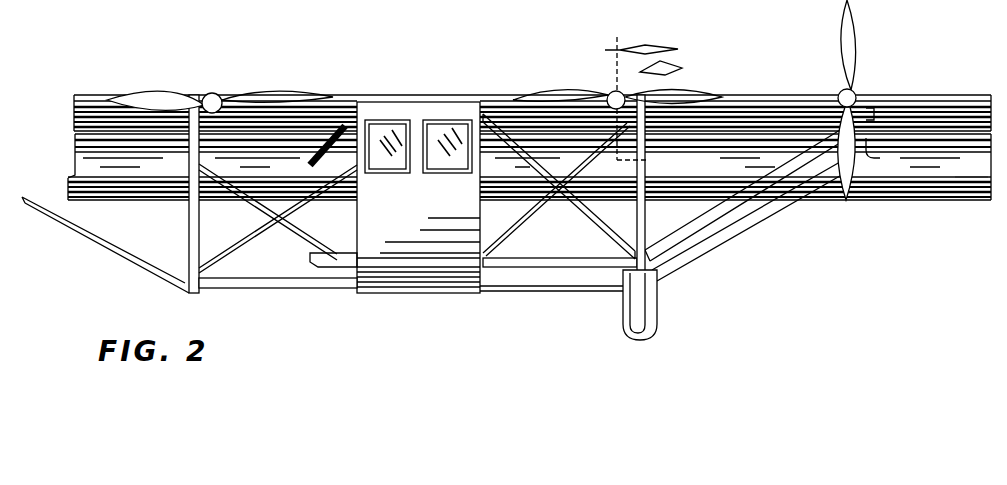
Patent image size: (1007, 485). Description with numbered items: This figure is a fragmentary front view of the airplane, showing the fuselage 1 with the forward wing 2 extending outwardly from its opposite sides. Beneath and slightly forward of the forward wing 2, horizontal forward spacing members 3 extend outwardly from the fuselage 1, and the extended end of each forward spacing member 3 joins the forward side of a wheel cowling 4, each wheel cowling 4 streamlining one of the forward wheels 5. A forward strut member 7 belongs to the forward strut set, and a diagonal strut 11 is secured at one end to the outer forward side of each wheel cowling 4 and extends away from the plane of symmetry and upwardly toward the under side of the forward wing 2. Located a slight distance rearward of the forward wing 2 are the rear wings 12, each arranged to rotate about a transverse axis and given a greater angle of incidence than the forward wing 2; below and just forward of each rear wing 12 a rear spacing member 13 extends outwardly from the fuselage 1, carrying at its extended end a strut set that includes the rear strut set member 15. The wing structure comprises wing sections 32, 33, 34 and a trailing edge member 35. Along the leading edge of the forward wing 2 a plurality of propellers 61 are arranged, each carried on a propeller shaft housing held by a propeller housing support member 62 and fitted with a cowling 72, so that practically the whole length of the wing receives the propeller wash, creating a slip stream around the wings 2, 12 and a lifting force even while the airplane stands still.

The fuselage 1 is at (410, 112).
The forward wing 2 is at (331, 96).
The forward spacing member 3 is at (328, 262).
The wheel cowling 4 is at (666, 274).
The forward wheel 5 is at (650, 160).
The forward strut member 7 is at (590, 307).
The diagonal strut 11 is at (118, 248).
The rear wing 12 is at (340, 102).
The rear spacing member 13 is at (252, 289).
The rear strut set member 15 is at (191, 207).
The wing section 32 is at (970, 127).
The wing section 33 is at (950, 130).
The wing section 34 is at (937, 127).
The trailing edge member 35 is at (927, 123).
The propeller 61 is at (272, 88).
The propeller housing support member 62 is at (88, 105).
The cowling 72 is at (208, 93).